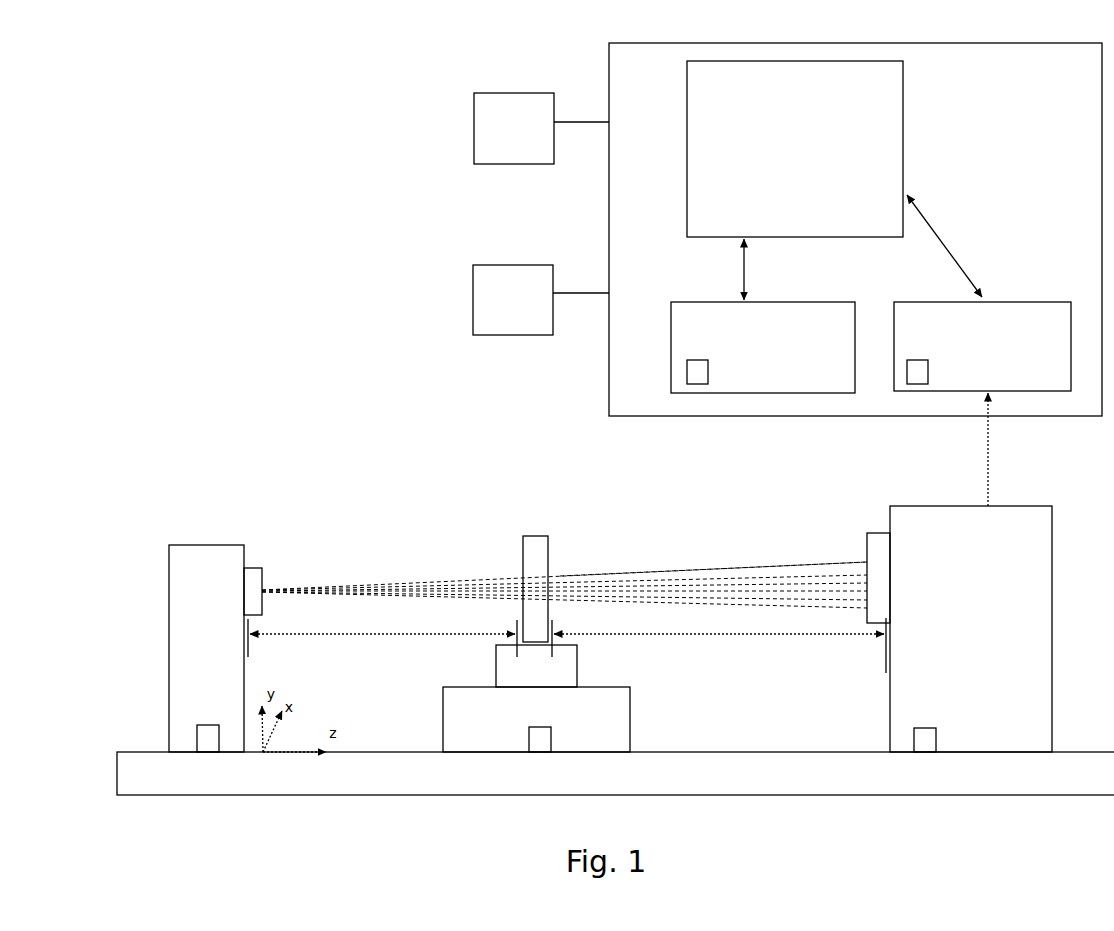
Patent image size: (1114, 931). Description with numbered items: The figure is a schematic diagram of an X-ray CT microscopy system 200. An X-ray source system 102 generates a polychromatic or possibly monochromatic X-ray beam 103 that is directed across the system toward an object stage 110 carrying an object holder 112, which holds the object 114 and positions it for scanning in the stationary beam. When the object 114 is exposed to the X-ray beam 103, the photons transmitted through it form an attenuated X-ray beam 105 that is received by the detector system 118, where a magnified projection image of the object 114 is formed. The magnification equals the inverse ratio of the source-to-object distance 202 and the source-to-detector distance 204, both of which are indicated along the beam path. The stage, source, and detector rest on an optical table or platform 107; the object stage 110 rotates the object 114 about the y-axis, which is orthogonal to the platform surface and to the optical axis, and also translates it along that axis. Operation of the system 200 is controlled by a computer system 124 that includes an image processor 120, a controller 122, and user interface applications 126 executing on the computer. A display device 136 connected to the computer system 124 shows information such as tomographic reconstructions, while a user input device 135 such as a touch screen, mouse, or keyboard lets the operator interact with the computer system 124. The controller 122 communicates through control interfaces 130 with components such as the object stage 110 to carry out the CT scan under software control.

The X-ray CT microscopy system 200 is at (434, 100).
The computer system 124 is at (855, 229).
The user interface applications 126 is at (795, 149).
The controller 122 is at (763, 347).
The image processor 120 is at (982, 346).
The display device 136 is at (541, 128).
The user input device 135 is at (541, 300).
The optical table or platform 107 is at (748, 790).
The X-ray source system 102 is at (215, 648).
The X-ray beam 103 is at (353, 585).
The attenuated X-ray beam 105 is at (695, 568).
The detector system 118 is at (959, 629).
The object stage 110 is at (536, 719).
The object holder 112 is at (578, 664).
The object 114 is at (533, 535).
The source-to-object distance 202 is at (382, 636).
The source-to-detector distance 204 is at (718, 636).
The controller interface 130 is at (687, 384).